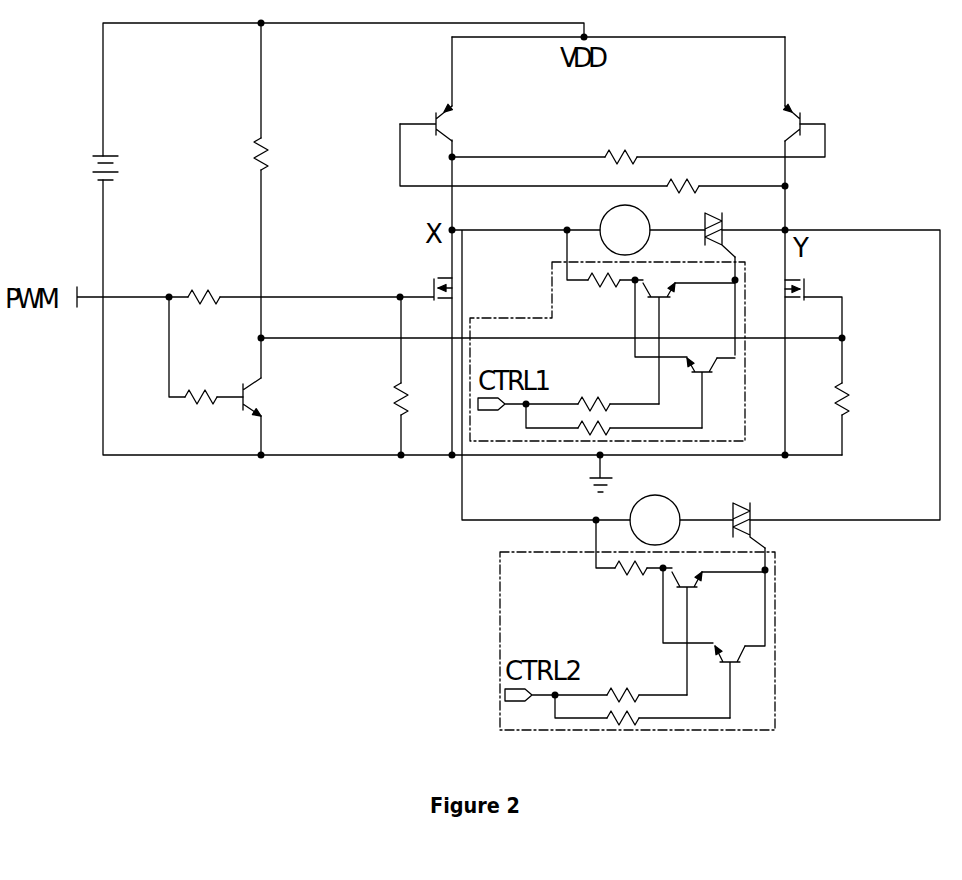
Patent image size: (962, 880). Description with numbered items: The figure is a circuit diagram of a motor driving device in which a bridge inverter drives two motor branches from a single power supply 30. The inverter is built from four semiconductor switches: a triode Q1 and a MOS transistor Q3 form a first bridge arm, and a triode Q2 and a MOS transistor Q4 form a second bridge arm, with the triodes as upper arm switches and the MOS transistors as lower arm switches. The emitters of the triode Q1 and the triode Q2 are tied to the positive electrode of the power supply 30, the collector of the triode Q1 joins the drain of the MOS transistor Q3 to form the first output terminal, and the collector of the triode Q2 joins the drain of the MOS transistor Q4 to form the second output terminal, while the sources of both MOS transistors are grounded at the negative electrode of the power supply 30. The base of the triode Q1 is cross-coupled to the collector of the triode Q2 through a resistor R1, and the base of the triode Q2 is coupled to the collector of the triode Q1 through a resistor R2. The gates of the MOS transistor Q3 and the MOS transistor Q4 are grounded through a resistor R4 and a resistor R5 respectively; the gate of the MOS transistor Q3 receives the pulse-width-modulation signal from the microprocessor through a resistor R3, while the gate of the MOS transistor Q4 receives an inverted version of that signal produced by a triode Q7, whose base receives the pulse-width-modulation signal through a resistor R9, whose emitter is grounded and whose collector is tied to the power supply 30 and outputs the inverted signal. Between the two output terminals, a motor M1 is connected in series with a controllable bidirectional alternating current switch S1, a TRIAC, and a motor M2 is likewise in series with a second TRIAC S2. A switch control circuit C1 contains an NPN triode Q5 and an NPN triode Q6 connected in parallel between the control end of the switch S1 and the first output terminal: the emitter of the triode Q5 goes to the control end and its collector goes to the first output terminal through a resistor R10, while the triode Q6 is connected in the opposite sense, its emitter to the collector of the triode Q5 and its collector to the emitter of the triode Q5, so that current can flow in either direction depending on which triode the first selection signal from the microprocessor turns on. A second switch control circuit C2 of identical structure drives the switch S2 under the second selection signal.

The power supply 30 is at (90, 156).
The resistor R1 is at (682, 202).
The resistor R2 is at (621, 139).
The resistor R3 is at (203, 280).
The resistor R4 is at (379, 399).
The resistor R5 is at (861, 399).
The resistor R9 is at (202, 378).
The resistor R10 is at (617, 439).
The triode Q1 is at (445, 122).
The triode Q2 is at (771, 122).
The MOS transistor Q3 is at (422, 280).
The MOS transistor Q4 is at (804, 307).
The triode Q5 is at (692, 489).
The triode Q6 is at (730, 538).
The triode Q7 is at (271, 397).
The motor M1 is at (625, 230).
The motor M2 is at (655, 520).
The controllable bidirectional alternating current switch S1 is at (732, 230).
The controllable bidirectional alternating current switch S2 is at (761, 519).
The switch control circuit C1 is at (550, 292).
The switch control circuit C2 is at (775, 618).